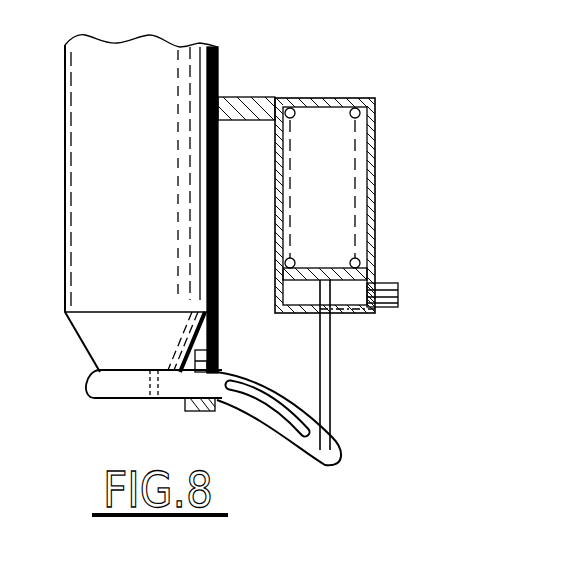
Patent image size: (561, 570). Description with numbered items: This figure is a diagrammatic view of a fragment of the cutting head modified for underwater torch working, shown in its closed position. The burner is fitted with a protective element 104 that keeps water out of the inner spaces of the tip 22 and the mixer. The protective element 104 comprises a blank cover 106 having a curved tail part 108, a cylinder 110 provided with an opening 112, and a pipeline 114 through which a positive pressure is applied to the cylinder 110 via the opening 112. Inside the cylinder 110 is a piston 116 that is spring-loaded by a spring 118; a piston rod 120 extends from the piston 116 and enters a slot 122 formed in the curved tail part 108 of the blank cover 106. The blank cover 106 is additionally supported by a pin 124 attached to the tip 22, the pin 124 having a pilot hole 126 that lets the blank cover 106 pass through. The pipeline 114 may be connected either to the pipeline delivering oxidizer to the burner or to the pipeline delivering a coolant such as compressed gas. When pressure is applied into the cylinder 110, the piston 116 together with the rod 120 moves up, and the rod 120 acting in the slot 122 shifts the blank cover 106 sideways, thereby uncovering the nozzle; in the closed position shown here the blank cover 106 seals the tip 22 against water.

The tip 22 is at (72, 162).
The protective element 104 is at (338, 40).
The blank cover 106 is at (140, 396).
The curved tail part 108 is at (310, 450).
The cylinder 110 is at (374, 148).
The opening 112 is at (370, 302).
The pipeline 114 is at (374, 284).
The piston 116 is at (347, 288).
The spring 118 is at (297, 128).
The piston rod 120 is at (332, 408).
The slot 122 is at (267, 418).
The pin 124 is at (140, 384).
The pilot hole 126 is at (218, 372).